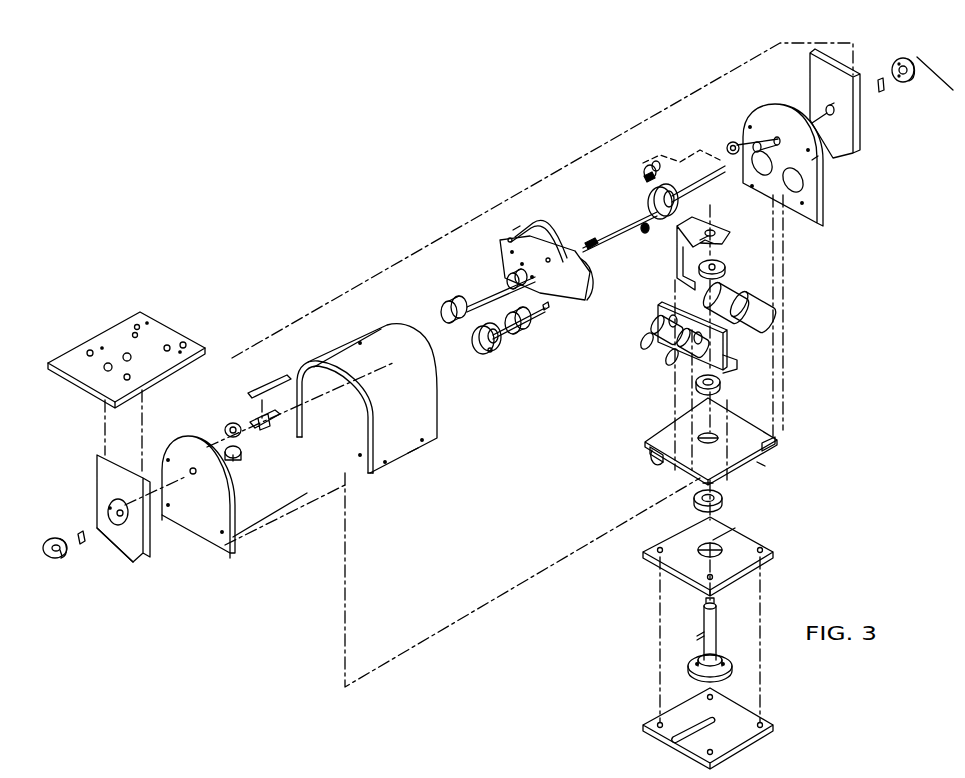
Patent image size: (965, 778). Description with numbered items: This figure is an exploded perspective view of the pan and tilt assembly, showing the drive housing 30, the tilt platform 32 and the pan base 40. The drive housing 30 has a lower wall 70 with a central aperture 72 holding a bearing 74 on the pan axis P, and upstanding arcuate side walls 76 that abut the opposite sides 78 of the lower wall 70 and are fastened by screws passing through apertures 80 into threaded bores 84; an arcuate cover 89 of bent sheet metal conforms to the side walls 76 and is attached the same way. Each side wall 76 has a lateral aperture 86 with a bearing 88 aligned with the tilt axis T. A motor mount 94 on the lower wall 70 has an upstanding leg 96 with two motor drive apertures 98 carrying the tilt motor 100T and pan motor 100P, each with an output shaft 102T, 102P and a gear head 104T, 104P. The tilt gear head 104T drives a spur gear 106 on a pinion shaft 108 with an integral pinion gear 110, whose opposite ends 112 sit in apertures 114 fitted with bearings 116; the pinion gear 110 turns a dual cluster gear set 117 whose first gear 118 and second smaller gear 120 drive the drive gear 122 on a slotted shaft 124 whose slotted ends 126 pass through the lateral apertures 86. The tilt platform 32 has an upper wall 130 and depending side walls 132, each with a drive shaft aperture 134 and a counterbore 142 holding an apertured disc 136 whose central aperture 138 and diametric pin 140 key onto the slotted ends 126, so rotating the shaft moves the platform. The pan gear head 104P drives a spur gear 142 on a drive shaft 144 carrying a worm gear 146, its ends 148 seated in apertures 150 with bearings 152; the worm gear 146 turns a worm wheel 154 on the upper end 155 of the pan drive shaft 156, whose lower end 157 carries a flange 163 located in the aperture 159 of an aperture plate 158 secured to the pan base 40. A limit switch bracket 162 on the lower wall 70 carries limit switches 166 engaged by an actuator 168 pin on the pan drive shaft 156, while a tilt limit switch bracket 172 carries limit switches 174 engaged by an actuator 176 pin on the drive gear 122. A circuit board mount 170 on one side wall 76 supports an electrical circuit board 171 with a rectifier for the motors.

The drive housing 30 is at (430, 423).
The tilt platform 32 is at (72, 382).
The pan base 40 is at (760, 737).
The lower wall 70 is at (755, 432).
The central aperture 72 is at (714, 433).
The bearing 74 is at (720, 384).
The arcuate side walls 76 is at (240, 538).
The opposite sides 78 is at (660, 458).
The apertures 80 is at (232, 537).
The threaded bores 84 is at (695, 475).
The lateral apertures 86 is at (193, 474).
The bearing 88 is at (237, 455).
The arcuate cover 89 is at (408, 453).
The motor mount 94 is at (727, 363).
The upstanding leg 96 is at (727, 345).
The motor drive apertures 98 is at (653, 323).
The tilt motor 100T is at (740, 282).
The pan motor 100P is at (765, 310).
The output shaft 102T is at (650, 333).
The output shaft 102P is at (700, 360).
The gear head 104T is at (680, 350).
The gear head 104P is at (677, 350).
The spur gear 106 is at (452, 303).
The pinion shaft 108 is at (480, 298).
The pinion gear 110 is at (510, 277).
The opposite ends 112 is at (447, 305).
The apertures 114 is at (737, 137).
The bearings 116 is at (230, 427).
The dual cluster gear set 117 is at (658, 163).
The first gear 118 is at (650, 170).
The second smaller gear 120 is at (647, 173).
The drive gear 122 is at (657, 195).
The slotted shaft 124 is at (617, 228).
The slotted ends 126 is at (590, 240).
The upper wall 130 is at (163, 340).
The depending side walls 132 is at (105, 480).
The drive shaft aperture 134 is at (130, 530).
The apertured disc 136 is at (60, 560).
The central aperture 138 is at (53, 560).
The diametric pin 140 is at (85, 540).
The spur gear 142 is at (493, 355).
The drive shaft 144 is at (513, 353).
The worm gear 146 is at (520, 332).
The ends 148 is at (490, 352).
The apertures 150 is at (795, 135).
The bearings 152 is at (810, 163).
The worm wheel 154 is at (725, 268).
The upper end 155 is at (703, 598).
The pan drive shaft 156 is at (717, 633).
The lower end 157 is at (722, 660).
The aperture plate 158 is at (670, 575).
The aperture 159 is at (723, 552).
The limit switch bracket 162 is at (677, 270).
The flange 163 is at (717, 677).
The limit switches 166 is at (720, 243).
The actuator 168 is at (700, 634).
The circuit board mount 170 is at (270, 427).
The electrical circuit board 171 is at (263, 387).
The tilt limit switch bracket 172 is at (513, 230).
The limit switches 174 is at (533, 213).
The actuator 176 is at (646, 232).
The pan axis P is at (713, 540).
The tilt axis T is at (938, 83).